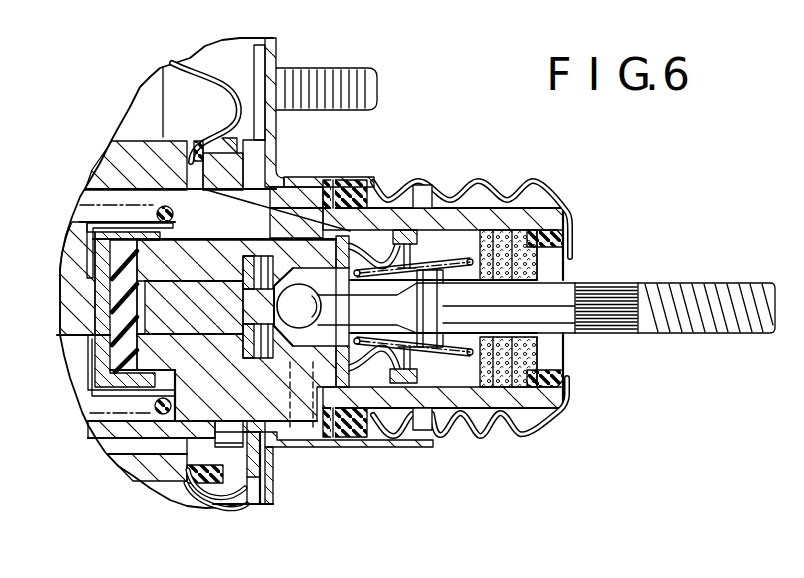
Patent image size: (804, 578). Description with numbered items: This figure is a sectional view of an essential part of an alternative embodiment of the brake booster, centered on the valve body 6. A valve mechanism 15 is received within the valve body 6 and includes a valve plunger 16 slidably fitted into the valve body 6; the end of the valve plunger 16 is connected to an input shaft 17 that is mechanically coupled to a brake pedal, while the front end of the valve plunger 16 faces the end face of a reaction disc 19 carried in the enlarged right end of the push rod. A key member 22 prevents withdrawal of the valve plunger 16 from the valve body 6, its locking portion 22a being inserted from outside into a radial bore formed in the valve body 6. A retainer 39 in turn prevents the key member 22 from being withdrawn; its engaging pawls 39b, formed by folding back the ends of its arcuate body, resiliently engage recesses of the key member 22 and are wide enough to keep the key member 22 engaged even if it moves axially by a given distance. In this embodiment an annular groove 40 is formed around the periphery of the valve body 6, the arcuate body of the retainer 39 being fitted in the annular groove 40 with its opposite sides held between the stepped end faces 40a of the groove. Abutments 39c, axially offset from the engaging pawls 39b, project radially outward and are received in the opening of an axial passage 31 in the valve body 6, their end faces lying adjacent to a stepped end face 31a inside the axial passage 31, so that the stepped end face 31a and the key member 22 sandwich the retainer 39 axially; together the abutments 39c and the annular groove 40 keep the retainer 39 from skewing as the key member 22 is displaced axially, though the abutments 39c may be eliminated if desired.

The valve body 6 is at (430, 202).
The valve mechanism 15 is at (353, 228).
The valve plunger 16 is at (92, 345).
The input shaft 17 is at (683, 334).
The reaction disc 19 is at (107, 257).
The key member 22 is at (254, 480).
The locking portion 22a is at (247, 362).
The axial passage 31 is at (133, 447).
The stepped end face 31a is at (193, 510).
The retainer 39 is at (259, 177).
The engaging pawl 39b is at (277, 450).
The abutment 39c is at (222, 508).
The annular groove 40 is at (244, 184).
The stepped end faces 40a is at (194, 138).